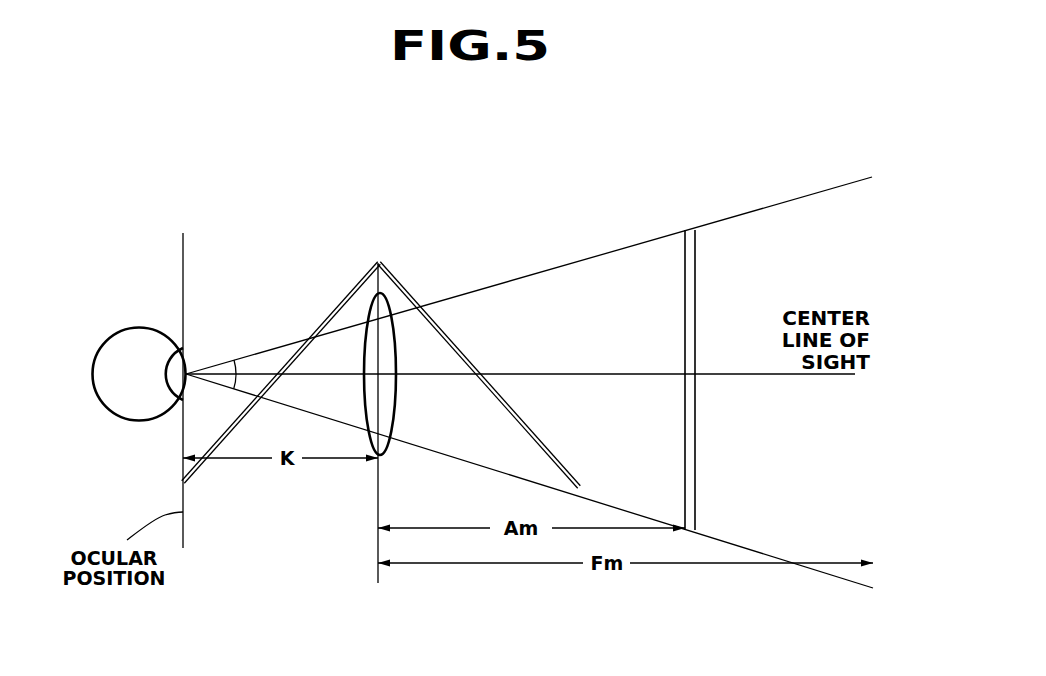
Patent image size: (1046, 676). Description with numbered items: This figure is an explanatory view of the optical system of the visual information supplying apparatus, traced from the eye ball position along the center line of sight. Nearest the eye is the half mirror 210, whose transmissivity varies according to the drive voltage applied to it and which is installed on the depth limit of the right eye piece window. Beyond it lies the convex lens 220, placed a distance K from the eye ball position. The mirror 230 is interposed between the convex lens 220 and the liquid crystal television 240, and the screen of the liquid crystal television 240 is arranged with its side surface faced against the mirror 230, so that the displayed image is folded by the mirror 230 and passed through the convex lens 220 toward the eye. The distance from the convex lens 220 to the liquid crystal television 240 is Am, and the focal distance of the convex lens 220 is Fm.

The half mirror 210 is at (243, 427).
The convex lens 220 is at (370, 311).
The mirror 230 is at (451, 337).
The liquid crystal television 240 is at (683, 255).